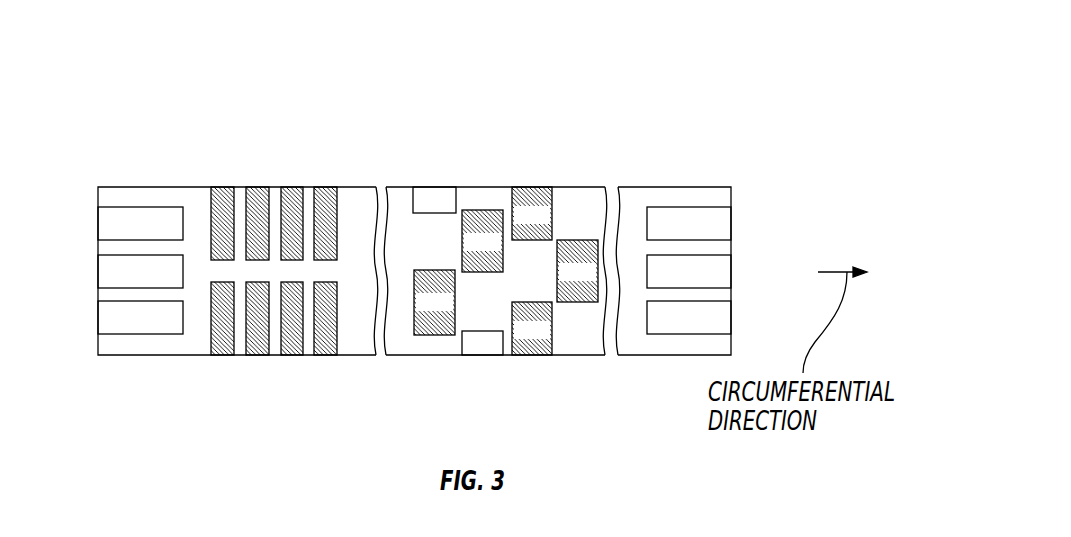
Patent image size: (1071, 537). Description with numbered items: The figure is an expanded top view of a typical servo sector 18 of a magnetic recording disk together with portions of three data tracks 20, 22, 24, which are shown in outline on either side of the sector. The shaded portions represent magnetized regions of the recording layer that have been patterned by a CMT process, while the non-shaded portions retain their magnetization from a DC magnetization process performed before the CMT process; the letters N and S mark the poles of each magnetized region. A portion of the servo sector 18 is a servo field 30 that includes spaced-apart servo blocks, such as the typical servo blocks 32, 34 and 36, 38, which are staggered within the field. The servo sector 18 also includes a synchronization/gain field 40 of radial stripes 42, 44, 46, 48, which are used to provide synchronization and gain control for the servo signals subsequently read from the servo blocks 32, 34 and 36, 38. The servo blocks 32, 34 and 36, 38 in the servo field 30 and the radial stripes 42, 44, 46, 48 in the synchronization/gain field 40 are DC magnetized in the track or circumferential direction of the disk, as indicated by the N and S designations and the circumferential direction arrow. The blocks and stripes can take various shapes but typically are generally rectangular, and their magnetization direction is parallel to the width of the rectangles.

The servo sector 18 is at (607, 107).
The data track 20 is at (107, 215).
The data track 22 is at (107, 270).
The data track 24 is at (107, 325).
The servo field 30 is at (605, 150).
The servo block 32 is at (427, 336).
The servo block 34 is at (478, 272).
The servo block 36 is at (533, 355).
The servo block 38 is at (572, 302).
The synchronization/gain field 40 is at (370, 150).
The radial stripe 42 is at (223, 355).
The radial stripe 44 is at (258, 187).
The radial stripe 46 is at (290, 355).
The radial stripe 48 is at (327, 187).